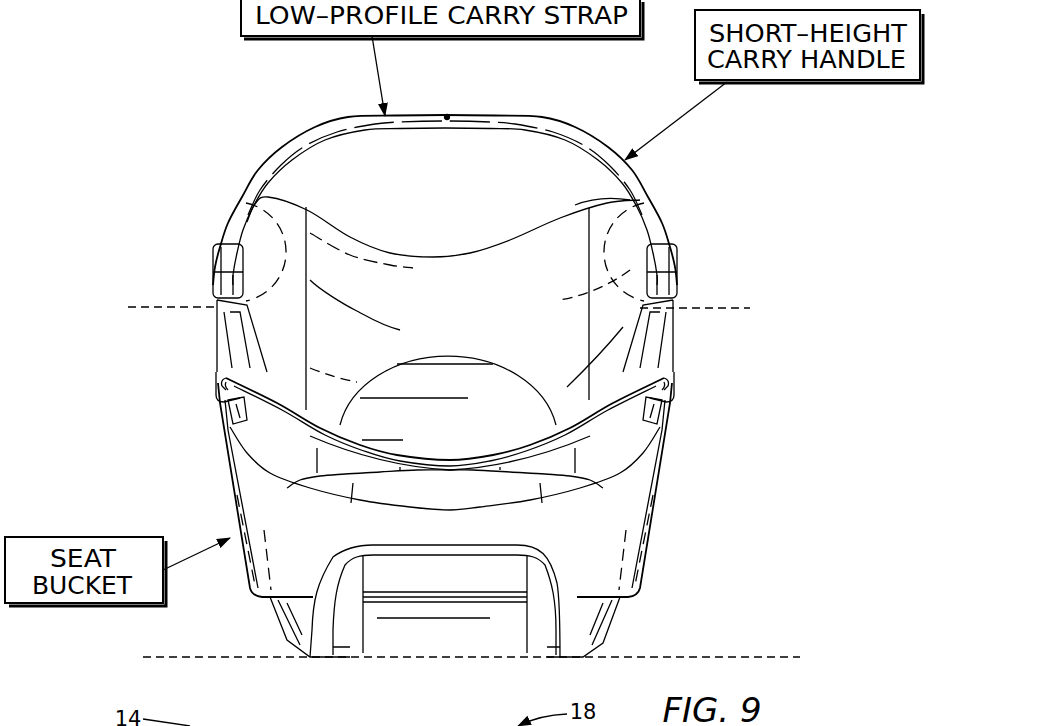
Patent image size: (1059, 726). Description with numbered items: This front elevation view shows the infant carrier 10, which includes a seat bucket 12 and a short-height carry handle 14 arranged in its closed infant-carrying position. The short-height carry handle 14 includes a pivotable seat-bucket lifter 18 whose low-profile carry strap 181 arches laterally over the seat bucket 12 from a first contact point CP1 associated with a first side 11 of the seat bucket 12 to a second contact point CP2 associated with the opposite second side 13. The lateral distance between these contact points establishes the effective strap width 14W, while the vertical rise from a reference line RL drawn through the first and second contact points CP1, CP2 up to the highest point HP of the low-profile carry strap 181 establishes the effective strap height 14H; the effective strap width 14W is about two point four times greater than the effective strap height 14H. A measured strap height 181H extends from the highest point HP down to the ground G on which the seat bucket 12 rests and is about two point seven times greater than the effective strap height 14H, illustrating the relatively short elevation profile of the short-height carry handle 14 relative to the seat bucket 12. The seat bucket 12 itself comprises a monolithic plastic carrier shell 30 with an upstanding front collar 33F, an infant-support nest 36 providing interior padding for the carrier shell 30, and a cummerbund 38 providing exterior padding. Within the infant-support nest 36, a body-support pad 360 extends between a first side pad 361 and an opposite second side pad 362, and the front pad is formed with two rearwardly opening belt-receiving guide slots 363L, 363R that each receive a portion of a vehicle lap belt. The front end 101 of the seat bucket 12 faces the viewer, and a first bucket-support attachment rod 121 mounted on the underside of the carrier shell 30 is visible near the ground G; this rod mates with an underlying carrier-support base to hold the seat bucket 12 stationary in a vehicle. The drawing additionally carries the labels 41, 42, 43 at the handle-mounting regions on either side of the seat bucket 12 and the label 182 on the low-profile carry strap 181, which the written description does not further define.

The infant carrier 10 is at (93, 150).
The low-profile carry strap 181 is at (241, 18).
The short-height carry handle 14 is at (822, 82).
The effective strap width 14W is at (213, 300).
The effective strap height 14H is at (795, 116).
The measured strap height 181H is at (779, 657).
The pivotable seat-bucket lifter 18 is at (593, 140).
The highest point HP is at (447, 117).
The first contact point CP1 is at (225, 275).
The second contact point CP2 is at (668, 280).
The reference line RL is at (118, 307).
The ground G is at (655, 657).
The seat bucket 12 is at (72, 537).
The first side 11 is at (212, 395).
The second side 13 is at (678, 399).
The left handle arm 41 is at (215, 340).
The right handle arm 42 is at (676, 347).
The pivot 43 is at (270, 252).
The carrier shell 30 is at (600, 472).
The front collar 33F is at (461, 499).
The infant-support nest 36 is at (483, 262).
The body-support pad 360 is at (398, 268).
The first side pad 361 is at (272, 237).
The second side pad 362 is at (600, 298).
The strap end 182 is at (640, 284).
The belt-receiving guide slot 363L is at (225, 420).
The belt-receiving guide slot 363R is at (668, 417).
The cummerbund 38 is at (652, 540).
The front end 101 is at (583, 557).
The first bucket-support attachment rod 121 is at (437, 593).